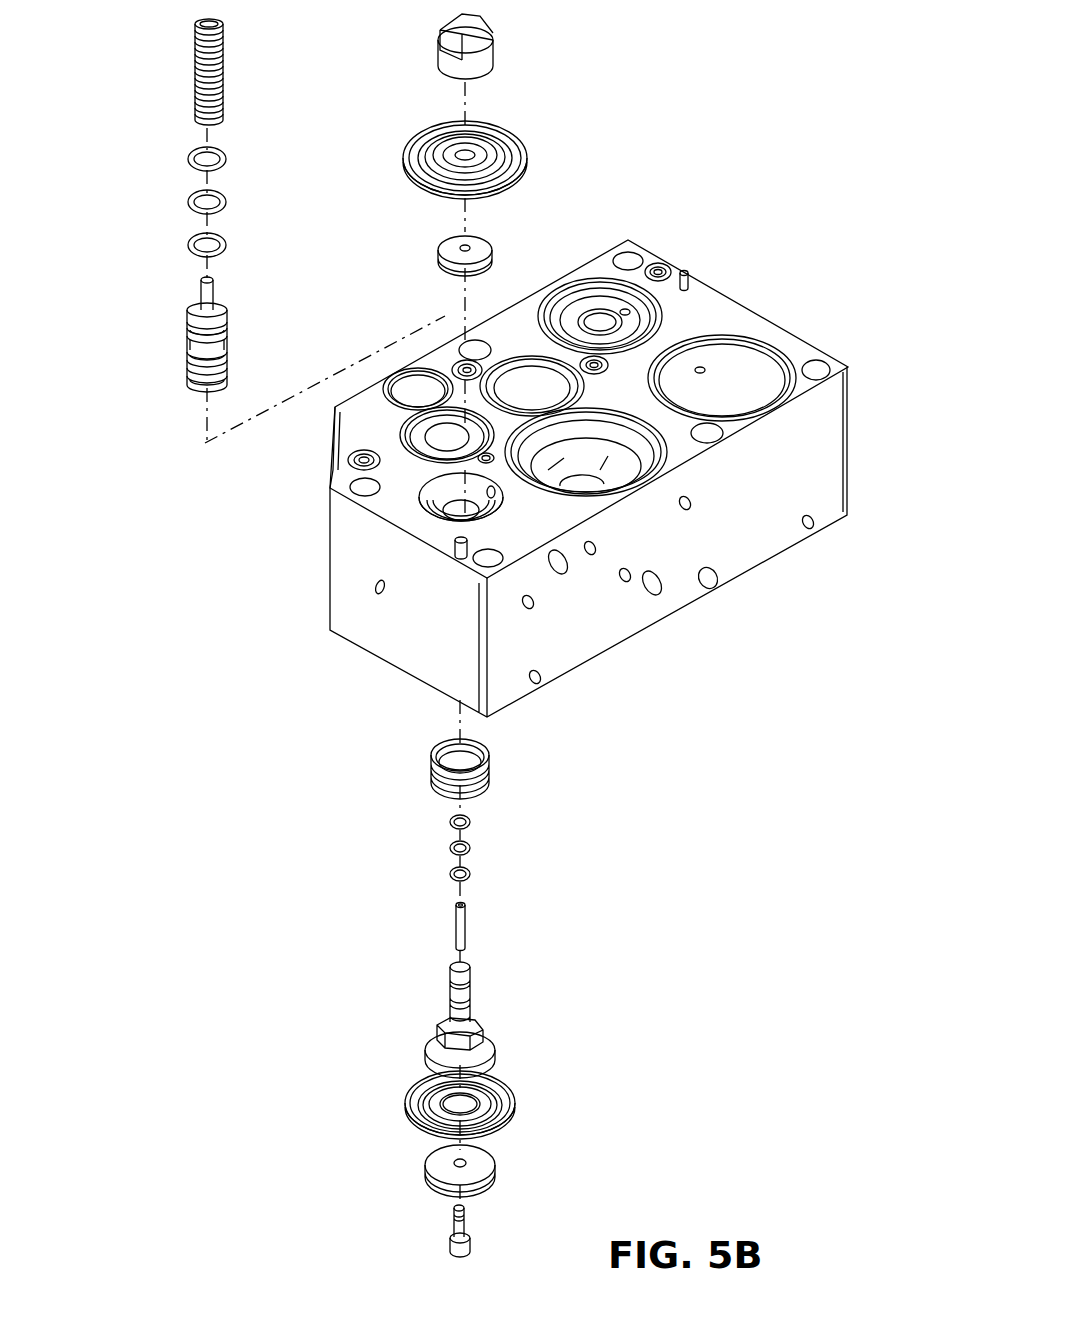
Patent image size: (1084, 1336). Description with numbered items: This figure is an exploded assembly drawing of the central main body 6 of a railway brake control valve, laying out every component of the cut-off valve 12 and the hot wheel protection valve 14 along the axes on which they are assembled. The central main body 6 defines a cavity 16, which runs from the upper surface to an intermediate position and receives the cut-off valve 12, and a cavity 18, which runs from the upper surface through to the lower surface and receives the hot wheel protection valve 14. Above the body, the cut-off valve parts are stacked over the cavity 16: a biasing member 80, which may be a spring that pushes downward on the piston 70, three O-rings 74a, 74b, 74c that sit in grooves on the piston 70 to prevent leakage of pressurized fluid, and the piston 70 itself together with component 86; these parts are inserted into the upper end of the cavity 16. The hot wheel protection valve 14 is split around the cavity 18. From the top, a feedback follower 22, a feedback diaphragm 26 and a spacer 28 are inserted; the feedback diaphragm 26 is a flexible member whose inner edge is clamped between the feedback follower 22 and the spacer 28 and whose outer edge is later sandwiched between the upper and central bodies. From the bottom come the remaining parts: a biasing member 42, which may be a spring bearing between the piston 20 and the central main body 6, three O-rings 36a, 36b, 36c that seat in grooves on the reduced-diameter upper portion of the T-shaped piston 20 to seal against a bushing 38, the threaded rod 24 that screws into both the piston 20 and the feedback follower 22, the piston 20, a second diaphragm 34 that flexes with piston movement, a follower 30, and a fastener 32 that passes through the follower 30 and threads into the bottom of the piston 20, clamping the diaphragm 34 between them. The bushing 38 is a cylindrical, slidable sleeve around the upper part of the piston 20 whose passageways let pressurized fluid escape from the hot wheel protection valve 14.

The central main body 6 is at (815, 493).
The cut-off valve 12 is at (182, 20).
The hot wheel protection valve 14 is at (522, 22).
The cavity 16 is at (400, 437).
The cavity 18 is at (445, 520).
The piston 20 is at (440, 1030).
The feedback follower 22 is at (440, 22).
The rod 24 is at (455, 928).
The feedback diaphragm 26 is at (408, 170).
The spacer 28 is at (438, 258).
The follower 30 is at (430, 1160).
The fastener 32 is at (449, 1240).
The diaphragm 34 is at (410, 1090).
The O-ring 36a is at (450, 823).
The O-ring 36b is at (450, 849).
The O-ring 36c is at (450, 875).
The bushing 38 is at (440, 495).
The biasing member 42 is at (432, 780).
The piston 70 is at (218, 338).
The O-ring 74a is at (228, 160).
The O-ring 74b is at (228, 202).
The O-ring 74c is at (228, 246).
The biasing member 80 is at (223, 66).
The spool groove 86 is at (216, 350).